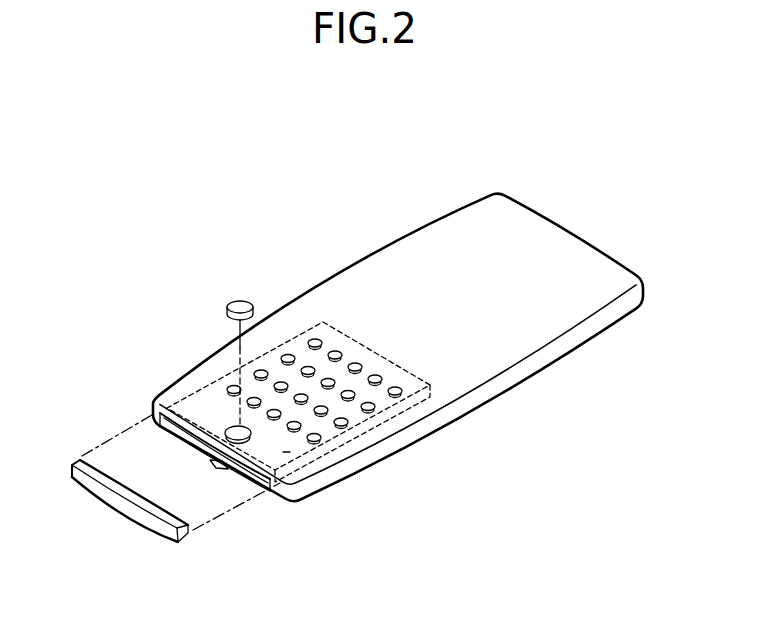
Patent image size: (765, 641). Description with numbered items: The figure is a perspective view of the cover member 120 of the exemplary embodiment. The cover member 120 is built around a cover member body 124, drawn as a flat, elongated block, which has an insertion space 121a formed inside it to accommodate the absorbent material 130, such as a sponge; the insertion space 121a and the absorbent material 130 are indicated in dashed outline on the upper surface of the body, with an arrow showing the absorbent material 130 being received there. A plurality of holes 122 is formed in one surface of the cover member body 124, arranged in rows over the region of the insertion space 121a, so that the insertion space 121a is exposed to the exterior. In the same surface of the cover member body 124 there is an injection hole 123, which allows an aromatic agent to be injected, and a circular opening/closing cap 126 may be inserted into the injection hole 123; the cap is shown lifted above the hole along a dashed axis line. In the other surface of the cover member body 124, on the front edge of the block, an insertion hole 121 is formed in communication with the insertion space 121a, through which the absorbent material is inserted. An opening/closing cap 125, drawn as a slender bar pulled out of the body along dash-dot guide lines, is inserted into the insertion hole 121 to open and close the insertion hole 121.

The cover member 120 is at (258, 212).
The insertion hole 121 is at (216, 463).
The insertion space 121a is at (343, 445).
The holes 122 is at (395, 396).
The injection hole 123 is at (249, 441).
The cover member body 124 is at (500, 363).
The opening/closing cap 125 is at (130, 500).
The circular opening/closing cap 126 is at (238, 307).
The absorbent material 130 is at (286, 447).